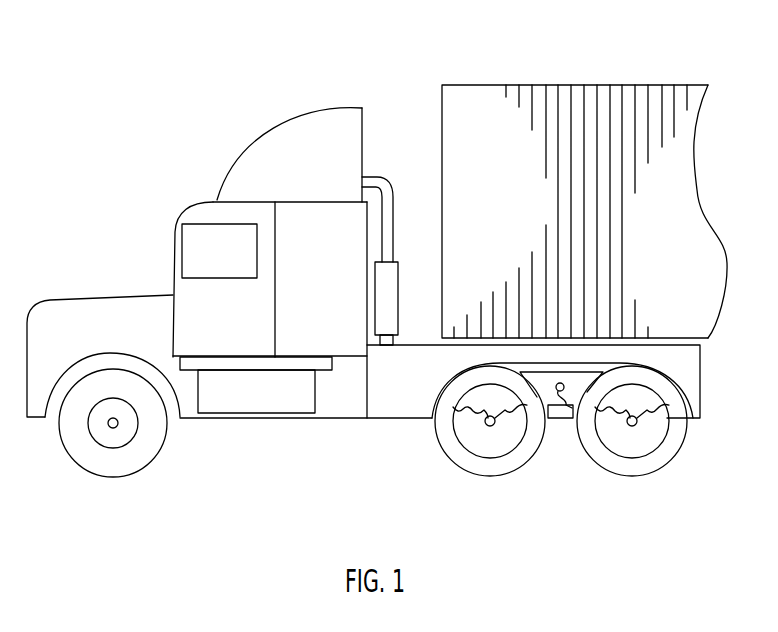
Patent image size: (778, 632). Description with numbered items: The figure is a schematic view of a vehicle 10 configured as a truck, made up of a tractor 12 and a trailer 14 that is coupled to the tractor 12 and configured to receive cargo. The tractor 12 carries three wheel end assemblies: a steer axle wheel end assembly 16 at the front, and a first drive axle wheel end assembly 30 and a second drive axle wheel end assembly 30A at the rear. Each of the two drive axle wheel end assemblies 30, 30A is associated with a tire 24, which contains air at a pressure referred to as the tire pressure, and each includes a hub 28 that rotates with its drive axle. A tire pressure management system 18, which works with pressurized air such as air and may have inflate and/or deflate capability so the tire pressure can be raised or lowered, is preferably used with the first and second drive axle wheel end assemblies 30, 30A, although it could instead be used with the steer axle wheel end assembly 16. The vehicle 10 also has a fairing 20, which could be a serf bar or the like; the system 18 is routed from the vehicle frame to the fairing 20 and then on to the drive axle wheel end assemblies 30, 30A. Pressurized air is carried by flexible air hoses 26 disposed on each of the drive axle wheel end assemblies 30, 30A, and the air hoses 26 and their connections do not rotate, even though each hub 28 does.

The vehicle 10 is at (649, 44).
The tractor 12 is at (332, 254).
The trailer 14 is at (506, 184).
The steer axle wheel end assembly 16 is at (88, 484).
The tire pressure management system 18 is at (610, 418).
The fairing 20 is at (562, 413).
The tire 24 is at (143, 450).
The flexible air hose 26 is at (663, 378).
The hub 28 is at (491, 426).
The first drive axle wheel end assembly 30 is at (410, 452).
The second drive axle wheel end assembly 30A is at (625, 494).